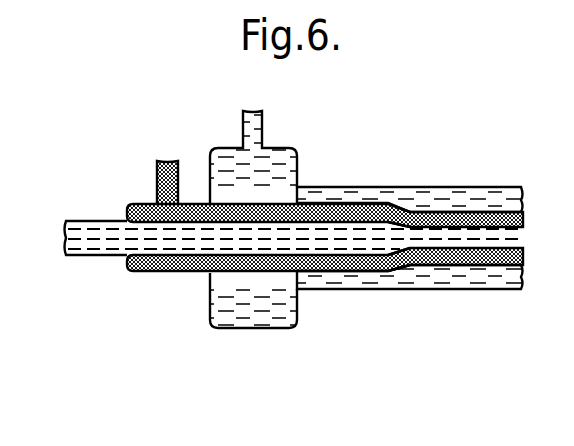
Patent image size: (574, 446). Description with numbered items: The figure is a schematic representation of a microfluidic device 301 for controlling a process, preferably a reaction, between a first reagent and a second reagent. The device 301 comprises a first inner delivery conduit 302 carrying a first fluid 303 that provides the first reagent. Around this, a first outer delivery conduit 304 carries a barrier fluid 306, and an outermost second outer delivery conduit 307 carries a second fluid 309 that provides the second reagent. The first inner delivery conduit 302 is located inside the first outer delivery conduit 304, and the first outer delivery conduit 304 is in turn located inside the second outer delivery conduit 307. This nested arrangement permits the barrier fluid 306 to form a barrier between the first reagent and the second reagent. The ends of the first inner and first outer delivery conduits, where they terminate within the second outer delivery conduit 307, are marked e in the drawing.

The microfluidic device 301 is at (112, 320).
The first inner delivery conduit 302 is at (92, 220).
The first fluid 303 is at (95, 248).
The first outer delivery conduit 304 is at (145, 203).
The barrier fluid 306 is at (168, 272).
The second outer delivery conduit 307 is at (458, 187).
The second fluid 309 is at (255, 305).
The ends of the first inner and outer delivery conduits e is at (392, 204).